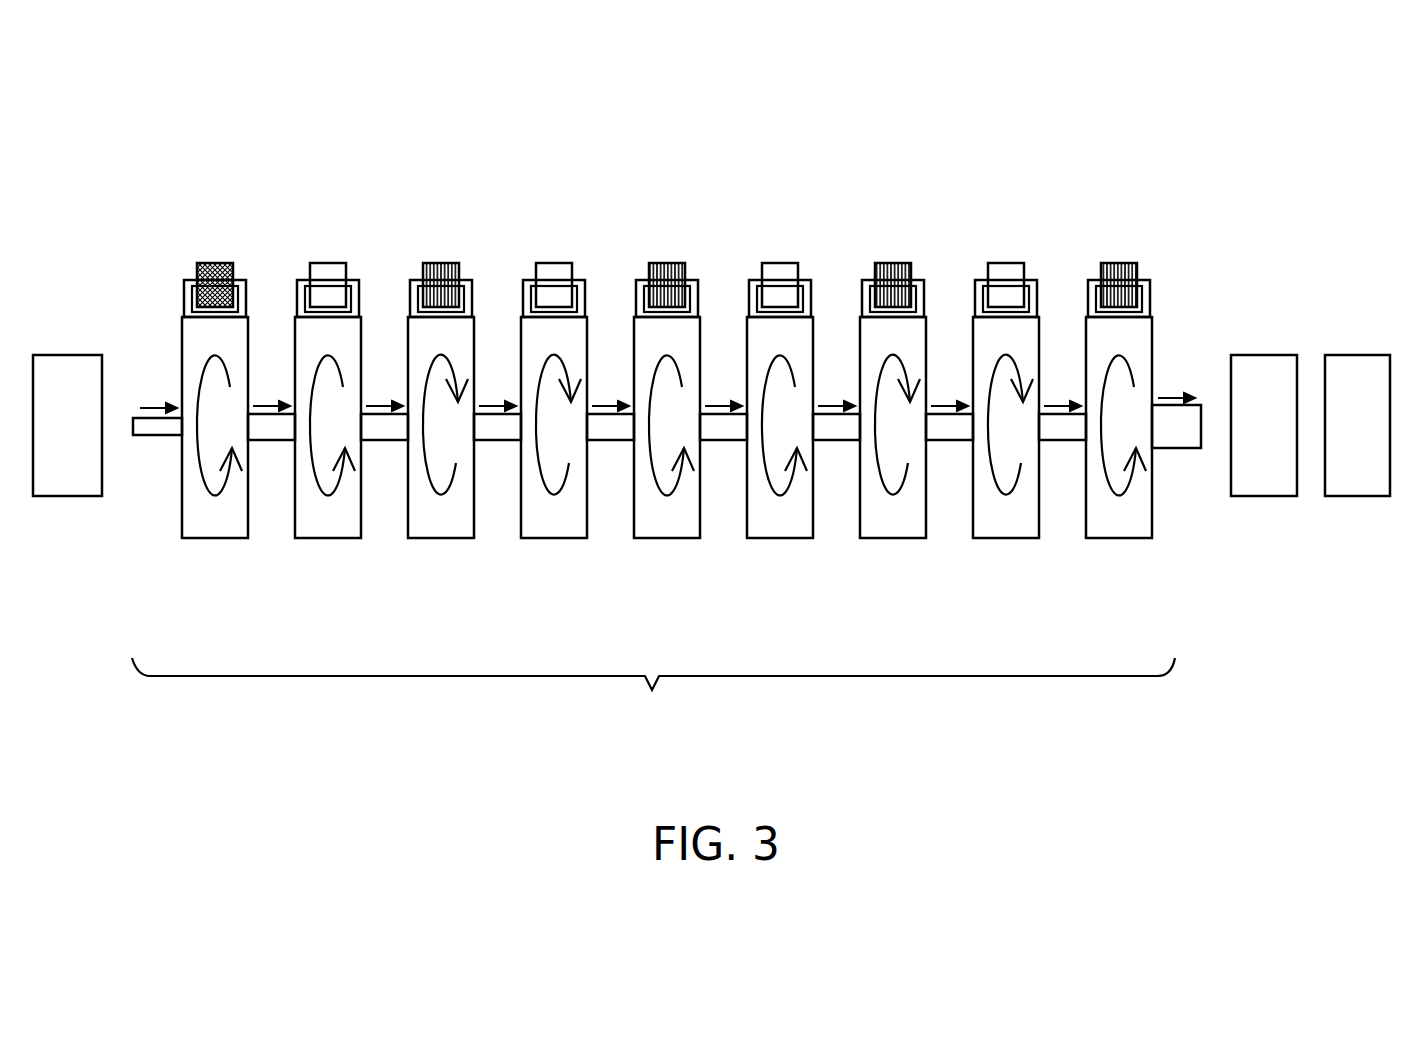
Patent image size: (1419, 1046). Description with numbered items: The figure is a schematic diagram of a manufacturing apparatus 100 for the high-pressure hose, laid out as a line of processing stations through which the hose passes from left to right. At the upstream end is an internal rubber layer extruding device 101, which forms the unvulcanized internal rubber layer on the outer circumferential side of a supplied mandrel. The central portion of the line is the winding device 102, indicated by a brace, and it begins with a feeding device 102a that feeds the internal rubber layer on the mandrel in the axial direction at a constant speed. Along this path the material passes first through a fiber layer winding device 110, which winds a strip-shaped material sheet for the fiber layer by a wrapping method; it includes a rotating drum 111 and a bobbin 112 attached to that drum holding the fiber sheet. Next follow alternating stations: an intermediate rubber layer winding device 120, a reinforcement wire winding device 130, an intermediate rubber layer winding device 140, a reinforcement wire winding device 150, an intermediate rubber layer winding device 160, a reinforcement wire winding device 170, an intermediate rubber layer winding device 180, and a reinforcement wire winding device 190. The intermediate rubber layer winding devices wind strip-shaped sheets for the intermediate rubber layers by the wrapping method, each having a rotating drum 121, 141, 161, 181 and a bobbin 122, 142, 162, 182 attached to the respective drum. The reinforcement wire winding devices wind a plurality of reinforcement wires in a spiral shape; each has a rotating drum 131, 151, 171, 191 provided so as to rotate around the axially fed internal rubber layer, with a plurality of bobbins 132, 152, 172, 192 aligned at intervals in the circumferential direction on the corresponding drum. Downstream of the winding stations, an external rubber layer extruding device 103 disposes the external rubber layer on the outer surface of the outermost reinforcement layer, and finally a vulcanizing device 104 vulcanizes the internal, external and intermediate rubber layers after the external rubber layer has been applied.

The manufacturing apparatus 100 is at (1175, 148).
The internal rubber layer extruding device 101 is at (73, 496).
The winding device 102 is at (653, 702).
The feeding device 102a is at (150, 436).
The external rubber layer extruding device 103 is at (1263, 496).
The vulcanizing device 104 is at (1357, 496).
The fiber layer winding device 110 is at (237, 538).
The rotating drum 111 is at (181, 329).
The bobbin 112 is at (217, 263).
The intermediate rubber layer winding device 120 is at (343, 538).
The rotating drum 121 is at (294, 329).
The bobbin 122 is at (330, 263).
The reinforcement wire winding device 130 is at (441, 538).
The rotating drum 131 is at (407, 329).
The bobbin 132 is at (443, 263).
The intermediate rubber layer winding device 140 is at (555, 538).
The rotating drum 141 is at (520, 329).
The bobbin 142 is at (556, 263).
The reinforcement wire winding device 150 is at (665, 538).
The rotating drum 151 is at (633, 329).
The bobbin 152 is at (669, 263).
The intermediate rubber layer winding device 160 is at (780, 538).
The rotating drum 161 is at (746, 329).
The bobbin 162 is at (782, 263).
The reinforcement wire winding device 170 is at (890, 538).
The rotating drum 171 is at (859, 329).
The bobbin 172 is at (895, 263).
The intermediate rubber layer winding device 180 is at (1003, 538).
The rotating drum 181 is at (972, 329).
The bobbin 182 is at (1008, 263).
The reinforcement wire winding device 190 is at (1115, 538).
The rotating drum 191 is at (1085, 329).
The bobbin 192 is at (1121, 263).